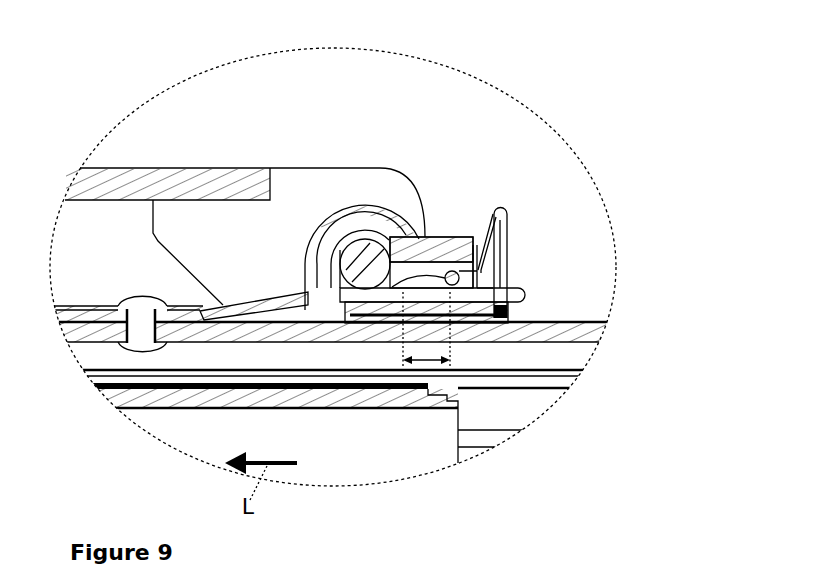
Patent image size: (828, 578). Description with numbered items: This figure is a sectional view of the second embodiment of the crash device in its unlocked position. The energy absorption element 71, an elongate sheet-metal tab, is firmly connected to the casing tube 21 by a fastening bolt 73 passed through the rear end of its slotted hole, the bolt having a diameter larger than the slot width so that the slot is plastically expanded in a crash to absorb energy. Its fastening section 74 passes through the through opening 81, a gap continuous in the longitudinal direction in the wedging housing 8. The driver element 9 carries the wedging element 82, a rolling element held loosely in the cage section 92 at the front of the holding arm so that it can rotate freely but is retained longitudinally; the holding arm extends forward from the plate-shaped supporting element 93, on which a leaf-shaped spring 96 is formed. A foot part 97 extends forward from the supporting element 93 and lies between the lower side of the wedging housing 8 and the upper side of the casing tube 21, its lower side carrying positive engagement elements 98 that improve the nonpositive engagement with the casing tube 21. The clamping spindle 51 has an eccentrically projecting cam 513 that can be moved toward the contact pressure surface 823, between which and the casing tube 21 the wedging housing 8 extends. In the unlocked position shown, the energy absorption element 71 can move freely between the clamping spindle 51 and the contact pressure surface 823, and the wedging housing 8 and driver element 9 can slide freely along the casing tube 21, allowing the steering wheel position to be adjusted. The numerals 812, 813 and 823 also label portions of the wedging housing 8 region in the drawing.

The wedging housing 8 is at (458, 207).
The driver element 9 is at (547, 227).
The casing tube 21 is at (575, 327).
The clamping spindle 51 is at (382, 283).
The energy absorption element 71 is at (231, 295).
The fastening bolt 73 is at (140, 322).
The fastening section 74 is at (500, 326).
The through opening 81 is at (418, 240).
The wedging element 82 is at (446, 238).
The cage section 92 is at (458, 275).
The supporting element 93 is at (509, 240).
The spring 96 is at (488, 214).
The foot part 97 is at (470, 315).
The positive engagement elements 98 is at (367, 325).
The cam 513 is at (345, 290).
The stop portion 812 is at (430, 392).
The guide wall 813 is at (396, 236).
The contact pressure surface 823 is at (358, 302).